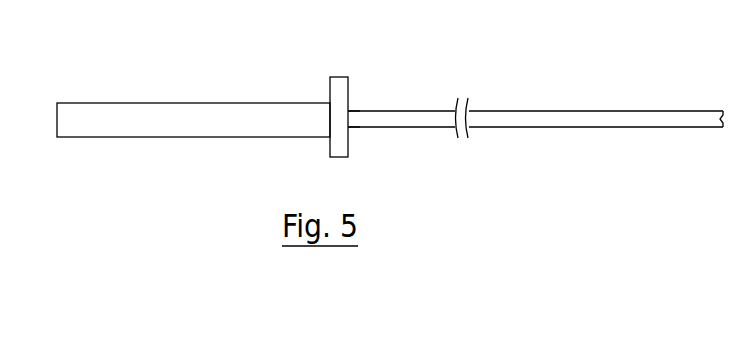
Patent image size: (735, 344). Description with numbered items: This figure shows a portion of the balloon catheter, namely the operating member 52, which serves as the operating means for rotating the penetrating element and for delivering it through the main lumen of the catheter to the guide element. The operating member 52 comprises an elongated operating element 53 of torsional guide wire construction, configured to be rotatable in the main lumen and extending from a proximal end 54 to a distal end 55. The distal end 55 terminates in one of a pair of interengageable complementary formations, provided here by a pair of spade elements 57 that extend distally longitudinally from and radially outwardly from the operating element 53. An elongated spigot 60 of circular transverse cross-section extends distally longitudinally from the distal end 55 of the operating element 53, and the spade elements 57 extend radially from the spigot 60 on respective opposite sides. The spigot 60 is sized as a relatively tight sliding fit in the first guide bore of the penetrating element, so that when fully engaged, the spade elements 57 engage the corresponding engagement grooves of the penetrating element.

The operating member 52 is at (388, 80).
The operating element 53 is at (505, 111).
The proximal end 54 is at (723, 112).
The distal end 55 is at (349, 128).
The spade elements 57 is at (338, 91).
The spigot 60 is at (139, 117).